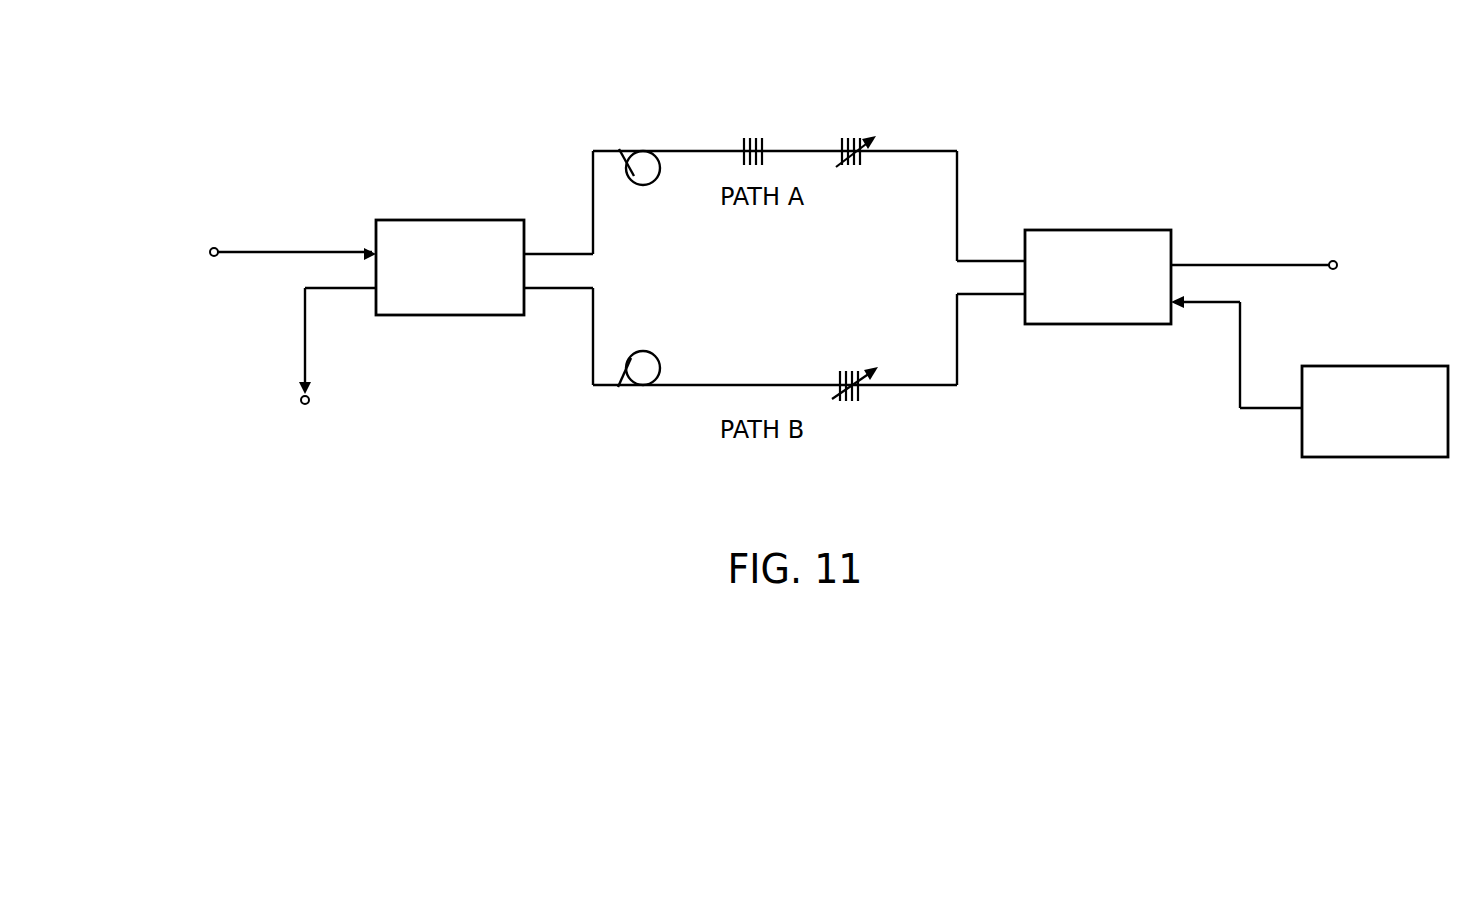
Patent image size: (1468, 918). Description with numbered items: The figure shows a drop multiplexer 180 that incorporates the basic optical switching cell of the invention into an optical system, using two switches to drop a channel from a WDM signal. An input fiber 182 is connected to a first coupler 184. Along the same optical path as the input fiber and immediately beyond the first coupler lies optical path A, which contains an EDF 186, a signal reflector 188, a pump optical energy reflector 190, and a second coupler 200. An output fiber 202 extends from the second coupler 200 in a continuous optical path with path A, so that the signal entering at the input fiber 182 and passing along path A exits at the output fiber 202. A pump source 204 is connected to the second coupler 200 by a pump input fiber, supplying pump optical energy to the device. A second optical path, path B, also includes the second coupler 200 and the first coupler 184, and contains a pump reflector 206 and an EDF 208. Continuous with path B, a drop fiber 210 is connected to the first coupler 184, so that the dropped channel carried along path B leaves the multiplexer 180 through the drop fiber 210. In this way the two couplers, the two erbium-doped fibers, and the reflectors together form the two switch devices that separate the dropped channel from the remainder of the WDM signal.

The drop multiplexer 180 is at (1012, 100).
The input fiber 182 is at (256, 245).
The first coupler 184 is at (403, 218).
The EDF 186 is at (622, 147).
The signal reflector 188 is at (757, 135).
The pump optical energy reflector 190 is at (858, 135).
The second coupler 200 is at (1063, 228).
The output fiber 202 is at (1287, 261).
The pump source 204 is at (1375, 364).
The pump reflector 206 is at (852, 404).
The EDF 208 is at (617, 388).
The drop fiber 210 is at (304, 336).